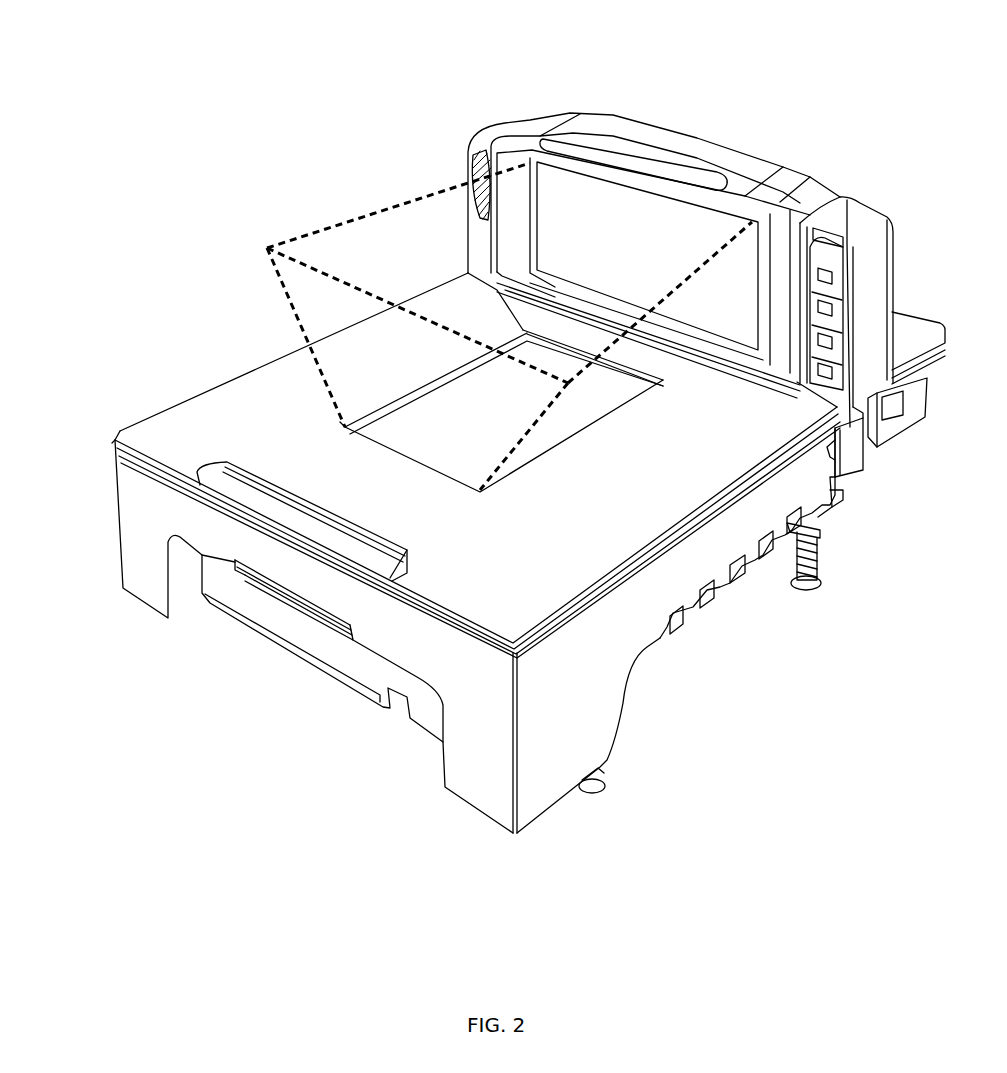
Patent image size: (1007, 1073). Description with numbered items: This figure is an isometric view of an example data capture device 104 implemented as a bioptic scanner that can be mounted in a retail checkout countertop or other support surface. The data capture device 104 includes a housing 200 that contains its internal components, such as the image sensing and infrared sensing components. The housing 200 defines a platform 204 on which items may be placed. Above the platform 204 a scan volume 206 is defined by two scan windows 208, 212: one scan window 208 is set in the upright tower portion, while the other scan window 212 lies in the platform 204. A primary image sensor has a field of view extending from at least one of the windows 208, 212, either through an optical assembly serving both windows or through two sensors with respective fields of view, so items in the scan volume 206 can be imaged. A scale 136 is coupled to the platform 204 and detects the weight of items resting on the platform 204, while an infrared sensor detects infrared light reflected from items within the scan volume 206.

The data capture device 104 is at (540, 95).
The scale 136 is at (283, 610).
The housing 200 is at (133, 503).
The platform 204 is at (280, 393).
The scan volume 206 is at (320, 230).
The scan window 208 is at (607, 197).
The scan window 212 is at (440, 447).